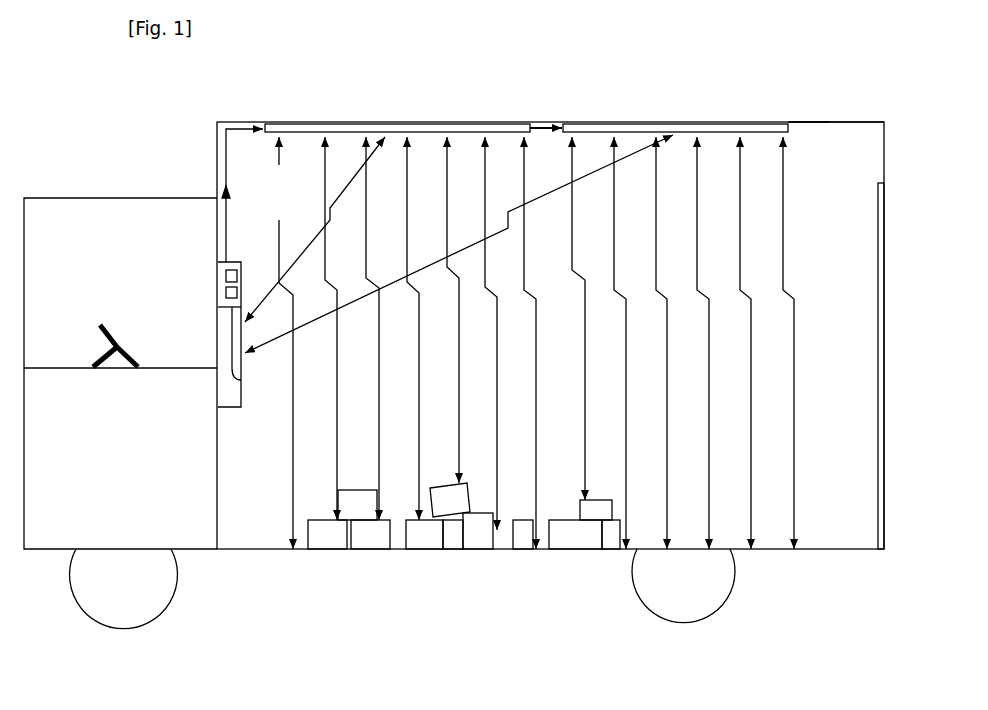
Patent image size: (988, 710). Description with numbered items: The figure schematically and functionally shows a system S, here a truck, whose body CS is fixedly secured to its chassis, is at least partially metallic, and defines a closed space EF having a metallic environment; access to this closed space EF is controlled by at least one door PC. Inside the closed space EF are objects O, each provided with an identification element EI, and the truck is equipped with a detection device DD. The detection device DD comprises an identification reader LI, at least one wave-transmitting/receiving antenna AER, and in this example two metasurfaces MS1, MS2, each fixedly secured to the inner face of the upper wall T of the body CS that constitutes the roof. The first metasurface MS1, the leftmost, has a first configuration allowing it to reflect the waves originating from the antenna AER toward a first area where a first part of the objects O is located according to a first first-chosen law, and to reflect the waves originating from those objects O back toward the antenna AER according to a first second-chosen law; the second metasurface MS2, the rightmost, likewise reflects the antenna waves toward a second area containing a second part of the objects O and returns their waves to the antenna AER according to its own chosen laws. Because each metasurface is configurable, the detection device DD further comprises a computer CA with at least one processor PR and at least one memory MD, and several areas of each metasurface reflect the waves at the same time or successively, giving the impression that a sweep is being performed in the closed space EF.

The system S is at (138, 197).
The closed space EF is at (848, 180).
The door PC is at (885, 340).
The upper wall T is at (852, 127).
The body CS is at (806, 122).
The detection device DD is at (451, 306).
The computer CA is at (233, 262).
The first metasurface MS1 is at (412, 124).
The second metasurface MS2 is at (673, 124).
The identification reader LI is at (228, 407).
The memory MD is at (227, 275).
The processor PR is at (227, 292).
The wave-transmitting/receiving antenna AER is at (232, 375).
The identification element EI is at (357, 489).
The object O is at (328, 549).